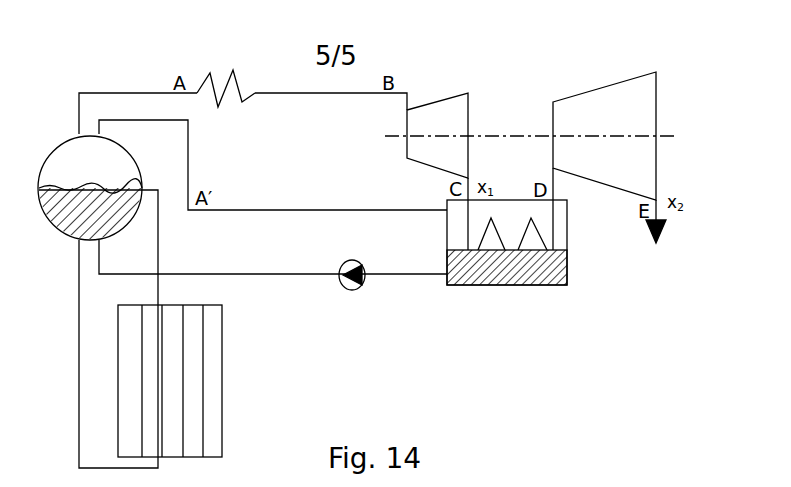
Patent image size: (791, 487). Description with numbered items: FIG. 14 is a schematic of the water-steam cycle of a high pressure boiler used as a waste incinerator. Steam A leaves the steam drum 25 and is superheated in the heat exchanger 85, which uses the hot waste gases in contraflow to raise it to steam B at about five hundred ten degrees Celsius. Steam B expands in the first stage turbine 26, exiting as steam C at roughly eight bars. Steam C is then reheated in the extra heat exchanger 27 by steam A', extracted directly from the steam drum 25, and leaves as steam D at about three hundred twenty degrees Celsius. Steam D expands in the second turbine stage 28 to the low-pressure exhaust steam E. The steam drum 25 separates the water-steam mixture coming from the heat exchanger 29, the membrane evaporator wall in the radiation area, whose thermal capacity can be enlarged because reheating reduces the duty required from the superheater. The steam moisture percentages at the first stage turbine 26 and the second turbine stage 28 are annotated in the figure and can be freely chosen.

The steam drum 25 is at (91, 179).
The first stage turbine 26 is at (437, 123).
The extra heat exchanger 27 is at (522, 242).
The second turbine stage 28 is at (596, 133).
The heat exchanger 29 is at (185, 381).
The heat exchanger 85 is at (226, 73).